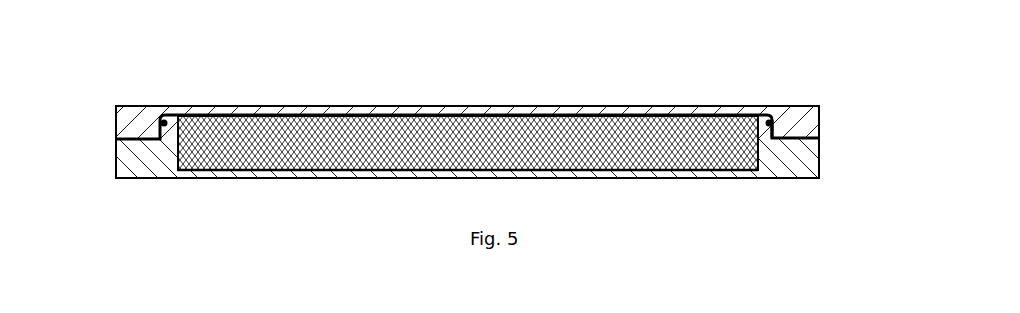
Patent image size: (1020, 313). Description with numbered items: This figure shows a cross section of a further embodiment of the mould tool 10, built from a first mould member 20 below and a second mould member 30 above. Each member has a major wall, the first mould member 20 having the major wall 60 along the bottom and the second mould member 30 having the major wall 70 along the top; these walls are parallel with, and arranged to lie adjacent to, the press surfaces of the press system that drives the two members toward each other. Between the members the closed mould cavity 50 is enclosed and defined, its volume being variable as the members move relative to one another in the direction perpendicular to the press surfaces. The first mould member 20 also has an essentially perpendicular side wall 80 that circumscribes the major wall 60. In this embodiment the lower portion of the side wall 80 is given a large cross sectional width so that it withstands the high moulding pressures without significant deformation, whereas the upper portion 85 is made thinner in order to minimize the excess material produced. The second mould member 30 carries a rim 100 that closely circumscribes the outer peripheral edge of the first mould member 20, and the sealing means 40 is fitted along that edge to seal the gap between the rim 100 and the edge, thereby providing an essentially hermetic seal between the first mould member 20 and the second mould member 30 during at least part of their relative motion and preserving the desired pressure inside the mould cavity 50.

The mould tool 10 is at (98, 75).
The first mould member 20 is at (225, 190).
The second mould member 30 is at (535, 92).
The sealing means 40 is at (159, 123).
The mould cavity 50 is at (588, 143).
The major wall 60 is at (340, 175).
The major wall 70 is at (377, 112).
The side wall 80 is at (783, 170).
The upper portion 85 is at (768, 137).
The rim 100 is at (797, 120).